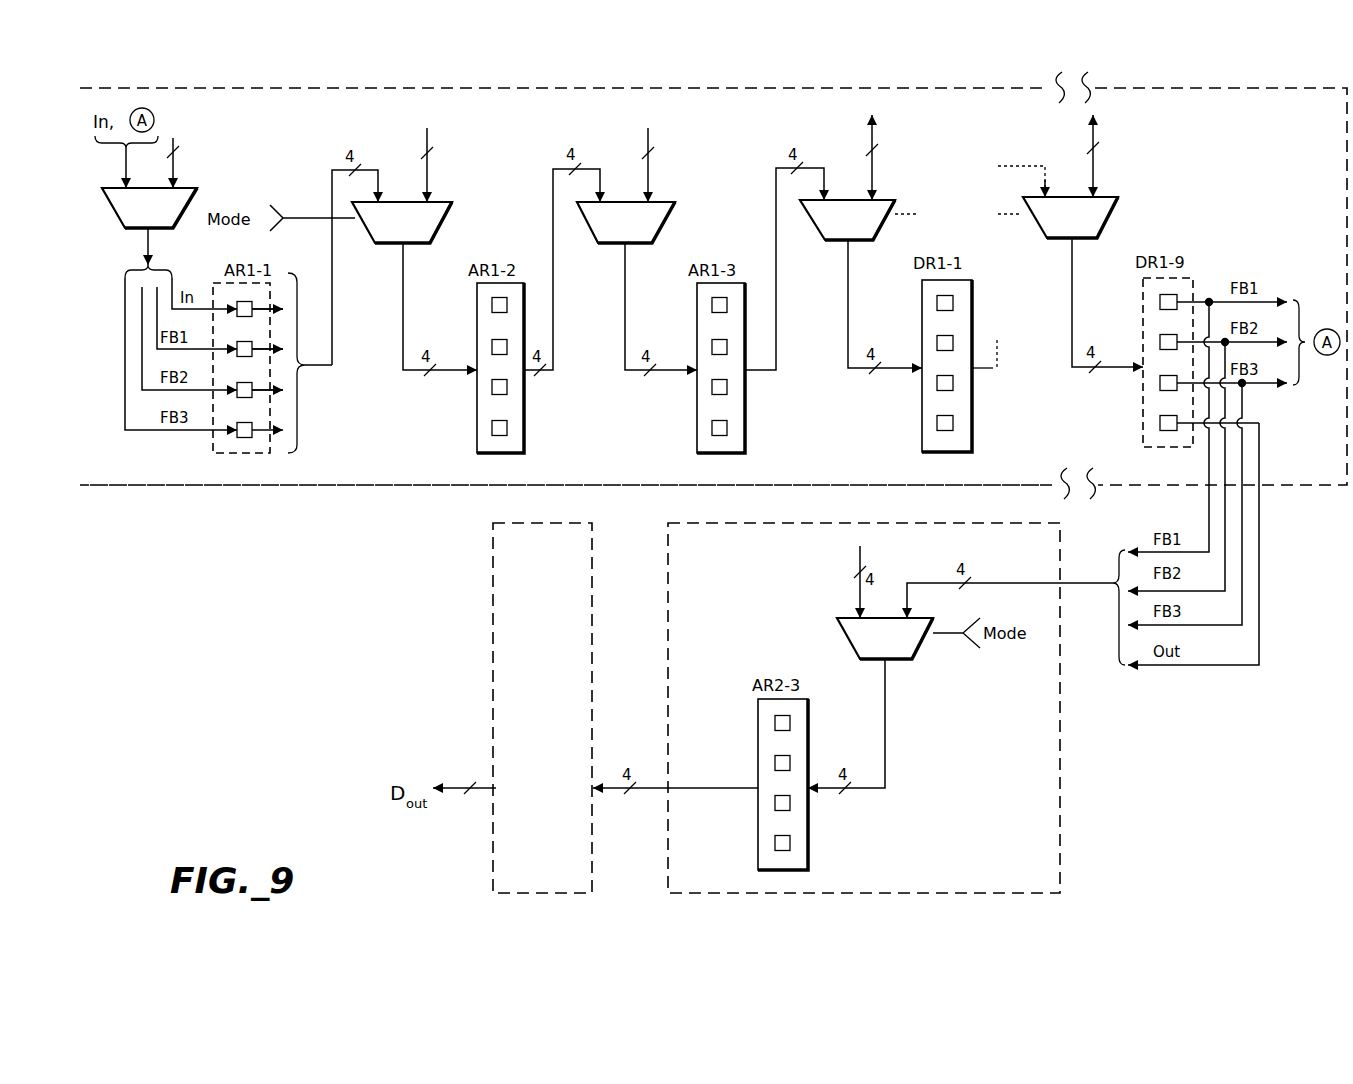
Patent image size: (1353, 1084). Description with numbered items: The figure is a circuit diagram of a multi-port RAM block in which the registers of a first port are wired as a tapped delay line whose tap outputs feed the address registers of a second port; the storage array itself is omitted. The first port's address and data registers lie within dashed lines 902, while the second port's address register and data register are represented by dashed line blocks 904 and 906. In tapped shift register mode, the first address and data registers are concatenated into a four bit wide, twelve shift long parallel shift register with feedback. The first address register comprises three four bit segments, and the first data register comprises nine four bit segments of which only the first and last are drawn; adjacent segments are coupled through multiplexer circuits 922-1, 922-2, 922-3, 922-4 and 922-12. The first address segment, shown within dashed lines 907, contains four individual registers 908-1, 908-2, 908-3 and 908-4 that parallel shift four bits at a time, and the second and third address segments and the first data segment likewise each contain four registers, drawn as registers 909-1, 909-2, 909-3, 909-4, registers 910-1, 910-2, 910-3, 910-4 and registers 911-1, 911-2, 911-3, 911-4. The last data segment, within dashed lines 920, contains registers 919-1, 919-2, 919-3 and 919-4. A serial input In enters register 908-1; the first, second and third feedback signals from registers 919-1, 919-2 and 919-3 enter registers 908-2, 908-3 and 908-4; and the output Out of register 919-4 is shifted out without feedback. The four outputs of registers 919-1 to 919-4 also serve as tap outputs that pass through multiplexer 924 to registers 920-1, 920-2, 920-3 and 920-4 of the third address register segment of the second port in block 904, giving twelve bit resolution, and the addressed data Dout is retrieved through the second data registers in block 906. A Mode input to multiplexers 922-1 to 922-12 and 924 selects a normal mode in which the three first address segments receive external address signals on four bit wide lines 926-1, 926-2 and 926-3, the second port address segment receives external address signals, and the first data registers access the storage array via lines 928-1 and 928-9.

The dashed lines enclosing first address and data registers 902 is at (248, 486).
The dashed line block of second address register 904 is at (1062, 782).
The dashed line block of second data register 906 is at (593, 868).
The dashed lines of shift register segment AR1-1 907 is at (213, 450).
The first register of segment AR1-1 908-1 is at (239, 302).
The second register of segment AR1-1 908-2 is at (252, 352).
The third register of segment AR1-1 908-3 is at (252, 393).
The fourth register of segment AR1-1 908-4 is at (252, 433).
The register cell 909-1 is at (492, 305).
The register cell 909-2 is at (492, 345).
The register cell 909-3 is at (492, 388).
The register cell 909-4 is at (492, 428).
The register cell 910-1 is at (712, 305).
The register cell 910-2 is at (712, 345).
The register cell 910-3 is at (712, 388).
The register cell 910-4 is at (712, 428).
The register cell 911-1 is at (937, 303).
The register cell 911-2 is at (937, 341).
The register cell 911-3 is at (937, 384).
The register cell 911-4 is at (937, 424).
The first register of segment DR1-9 919-1 is at (1160, 302).
The second register of segment DR1-9 919-2 is at (1160, 340).
The third register of segment DR1-9 919-3 is at (1160, 384).
The fourth register of segment DR1-9 919-4 is at (1160, 424).
The dashed lines of data register segment DR1-9 920 is at (1197, 280).
The first register of address register segment AR2-3 920-1 is at (775, 723).
The second register of address register segment AR2-3 920-2 is at (775, 761).
The third register of address register segment AR2-3 920-3 is at (775, 804).
The fourth register of address register segment AR2-3 920-4 is at (775, 844).
The multiplexer circuit 922-1 is at (182, 195).
The multiplexer circuit 922-2 is at (432, 208).
The multiplexer circuit 922-3 is at (655, 208).
The multiplexer circuit 922-4 is at (878, 208).
The multiplexer circuit 922-12 is at (1102, 208).
The multiplexer 924 is at (850, 622).
The 4-bit wide line 926-1 is at (176, 140).
The 4-bit wide line 926-2 is at (432, 145).
The 4-bit wide line 926-3 is at (653, 145).
The line providing access to storage array 928-1 is at (878, 140).
The line providing access to storage array 928-9 is at (1098, 140).